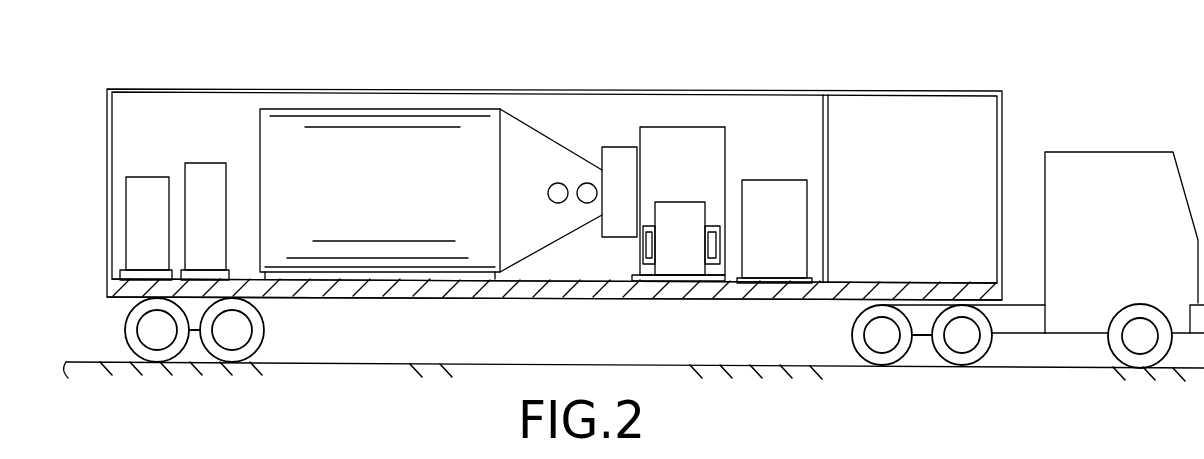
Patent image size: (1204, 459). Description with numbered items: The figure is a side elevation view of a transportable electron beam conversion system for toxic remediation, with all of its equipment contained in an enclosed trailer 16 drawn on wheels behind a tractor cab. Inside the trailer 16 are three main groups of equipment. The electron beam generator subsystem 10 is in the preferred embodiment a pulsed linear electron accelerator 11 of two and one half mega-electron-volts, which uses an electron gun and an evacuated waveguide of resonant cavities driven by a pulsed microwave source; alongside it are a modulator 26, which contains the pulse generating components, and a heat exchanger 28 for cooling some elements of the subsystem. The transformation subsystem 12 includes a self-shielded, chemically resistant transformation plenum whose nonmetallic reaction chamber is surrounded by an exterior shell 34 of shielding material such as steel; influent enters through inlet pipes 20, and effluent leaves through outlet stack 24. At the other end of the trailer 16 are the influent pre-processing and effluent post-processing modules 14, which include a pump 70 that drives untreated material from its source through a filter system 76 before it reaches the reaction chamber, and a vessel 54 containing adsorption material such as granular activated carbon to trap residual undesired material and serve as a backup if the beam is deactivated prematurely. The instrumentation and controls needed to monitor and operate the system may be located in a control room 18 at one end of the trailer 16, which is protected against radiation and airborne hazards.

The electron beam generator subsystem 10 is at (640, 83).
The pulsed linear electron accelerator 11 is at (662, 168).
The transformation subsystem 12 is at (262, 80).
The influent pre-processing and effluent post-processing modules 14 is at (125, 78).
The trailer 16 is at (1001, 91).
The control room 18 is at (990, 83).
The inlet pipes 20 is at (551, 201).
The outlet stack 24 is at (586, 203).
The modulator 26 is at (757, 228).
The heat exchanger 28 is at (659, 248).
The exterior shell 34 is at (366, 175).
The vessel 54 is at (131, 229).
The pump 70 is at (604, 180).
The filter system 76 is at (189, 229).